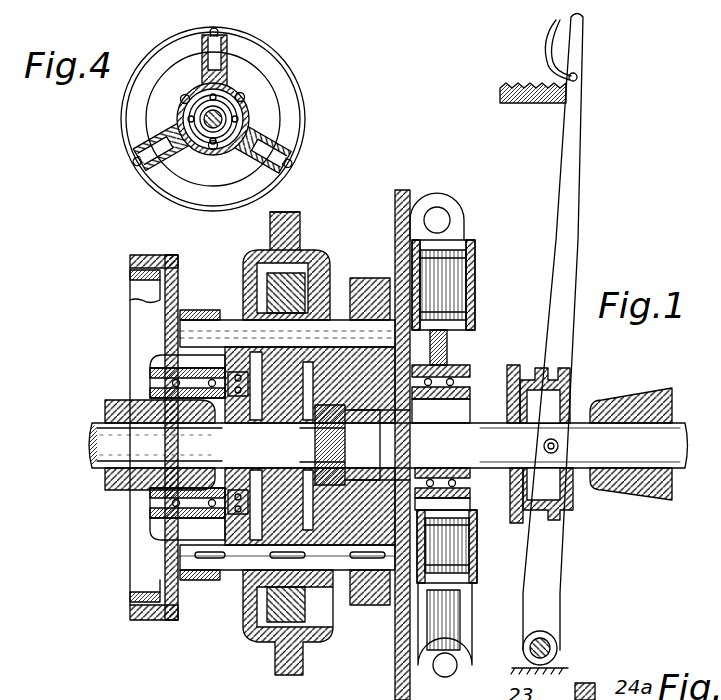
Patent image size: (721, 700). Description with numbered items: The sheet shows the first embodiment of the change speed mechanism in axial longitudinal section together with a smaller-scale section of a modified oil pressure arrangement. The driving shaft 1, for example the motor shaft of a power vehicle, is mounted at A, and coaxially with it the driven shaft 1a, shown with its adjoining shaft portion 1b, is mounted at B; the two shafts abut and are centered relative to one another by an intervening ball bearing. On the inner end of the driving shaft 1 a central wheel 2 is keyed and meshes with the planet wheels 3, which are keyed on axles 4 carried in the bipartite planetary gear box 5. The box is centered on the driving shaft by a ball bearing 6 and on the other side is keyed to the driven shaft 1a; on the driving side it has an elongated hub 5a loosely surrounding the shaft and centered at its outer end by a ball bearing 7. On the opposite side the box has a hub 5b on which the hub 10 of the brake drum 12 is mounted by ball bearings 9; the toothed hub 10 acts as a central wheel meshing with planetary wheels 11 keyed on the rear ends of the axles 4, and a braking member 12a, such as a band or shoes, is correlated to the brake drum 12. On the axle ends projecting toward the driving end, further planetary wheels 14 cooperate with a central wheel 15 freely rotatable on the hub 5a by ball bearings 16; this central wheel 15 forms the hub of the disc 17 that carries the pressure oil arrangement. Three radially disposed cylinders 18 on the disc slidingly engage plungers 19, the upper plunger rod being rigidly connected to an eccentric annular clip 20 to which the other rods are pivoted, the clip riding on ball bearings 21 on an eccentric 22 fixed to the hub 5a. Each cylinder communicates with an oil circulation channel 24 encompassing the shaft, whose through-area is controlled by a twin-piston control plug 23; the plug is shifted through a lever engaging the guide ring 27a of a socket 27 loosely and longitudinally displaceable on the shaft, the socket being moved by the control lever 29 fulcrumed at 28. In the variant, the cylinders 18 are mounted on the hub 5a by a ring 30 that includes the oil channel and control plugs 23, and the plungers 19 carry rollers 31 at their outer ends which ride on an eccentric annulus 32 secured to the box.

In FIG. 1, the driving shaft 1 is at (672, 447).
In FIG. 1, the driven shaft 1a is at (98, 441).
In FIG. 1, the shaft portion 1b is at (157, 445).
In FIG. 1, the central wheel 2 is at (333, 430).
In FIG. 1, the planet wheels 3 is at (268, 286).
In FIG. 1, the axles 4 is at (200, 336).
In FIG. 1, the planetary gear box 5 is at (258, 262).
In FIG. 1, the elongated hub 5a is at (400, 427).
In FIG. 1, the hub 5b is at (152, 477).
In FIG. 1, the ball bearing 6 is at (350, 437).
In FIG. 1, the ball bearing 7 is at (466, 478).
In FIG. 1, the ball bearings 9 is at (165, 380).
In FIG. 1, the hub of brake drum 10 is at (170, 372).
In FIG. 1, the planetary wheels 11 is at (190, 312).
In FIG. 1, the brake drum 12 is at (160, 256).
In FIG. 1, the braking member 12a is at (140, 275).
In FIG. 1, the planetary wheels 14 is at (364, 283).
In FIG. 1, the central wheel 15 is at (310, 506).
In FIG. 1, the ball bearings 16 is at (310, 385).
In FIG. 1, the disc 17 is at (400, 630).
In FIG. 4, the cylinders 18 is at (255, 128).
In FIG. 1, the cylinders 18 is at (475, 252).
In FIG. 4, the plungers 19 is at (290, 150).
In FIG. 1, the plungers 19 is at (452, 277).
In FIG. 1, the eccentric annular clip 20 is at (455, 372).
In FIG. 1, the ball bearings 21 is at (458, 470).
In FIG. 1, the eccentric 22 is at (462, 393).
In FIG. 4, the control plug 23 is at (181, 97).
In FIG. 4, the oil circulation channel 24 is at (230, 150).
In FIG. 1, the oil circulation channel 24 is at (448, 208).
In FIG. 1, the socket 27 is at (573, 381).
In FIG. 1, the guide ring 27a is at (513, 364).
In FIG. 1, the fulcrum 28 is at (553, 648).
In FIG. 1, the control lever 29 is at (566, 232).
In FIG. 4, the ring 30 is at (170, 165).
In FIG. 4, the rollers 31 is at (210, 29).
In FIG. 4, the eccentric annulus 32 is at (304, 103).
In FIG. 1, the mounting of driving shaft A is at (631, 450).
In FIG. 1, the mounting of driven shaft B is at (106, 488).